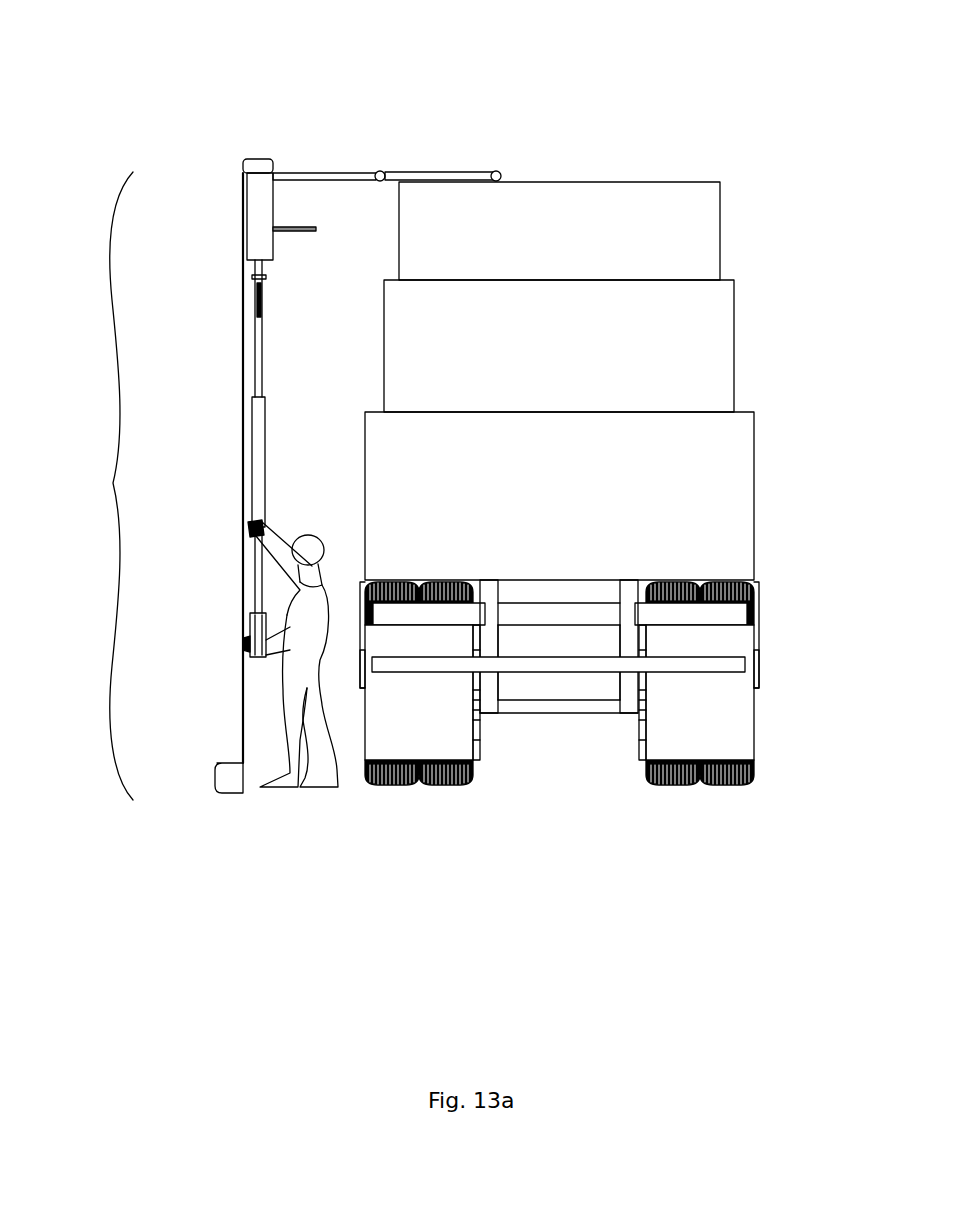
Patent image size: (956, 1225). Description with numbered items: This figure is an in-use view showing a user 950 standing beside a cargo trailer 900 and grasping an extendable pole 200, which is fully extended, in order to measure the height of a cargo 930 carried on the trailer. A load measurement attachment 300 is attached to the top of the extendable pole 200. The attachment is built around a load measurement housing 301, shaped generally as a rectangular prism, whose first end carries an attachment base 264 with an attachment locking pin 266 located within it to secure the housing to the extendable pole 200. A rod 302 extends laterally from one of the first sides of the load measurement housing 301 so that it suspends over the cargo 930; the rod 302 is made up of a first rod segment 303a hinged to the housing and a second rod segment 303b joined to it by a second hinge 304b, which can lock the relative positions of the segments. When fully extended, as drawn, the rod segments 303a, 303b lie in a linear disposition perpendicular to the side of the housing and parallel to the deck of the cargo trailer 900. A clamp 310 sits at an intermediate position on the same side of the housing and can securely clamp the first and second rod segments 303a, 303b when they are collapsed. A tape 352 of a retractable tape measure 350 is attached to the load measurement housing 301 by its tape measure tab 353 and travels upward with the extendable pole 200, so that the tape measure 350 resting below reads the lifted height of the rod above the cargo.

The extendable pole 200 is at (358, 458).
The attachment base 264 is at (263, 268).
The attachment locking pin 266 is at (263, 276).
The load measurement attachment 300 is at (246, 124).
The load measurement housing 301 is at (258, 193).
The rod 302 is at (392, 176).
The first rod segment 303a is at (352, 172).
The second rod segment 303b is at (453, 170).
The second hinge 304b is at (382, 181).
The clamp 310 is at (283, 228).
The retractable tape measure 350 is at (105, 482).
The tape 352 is at (240, 470).
The tape measure tab 353 is at (243, 173).
The cargo trailer 900 is at (782, 638).
The cargo 930 is at (740, 157).
The user 950 is at (300, 575).